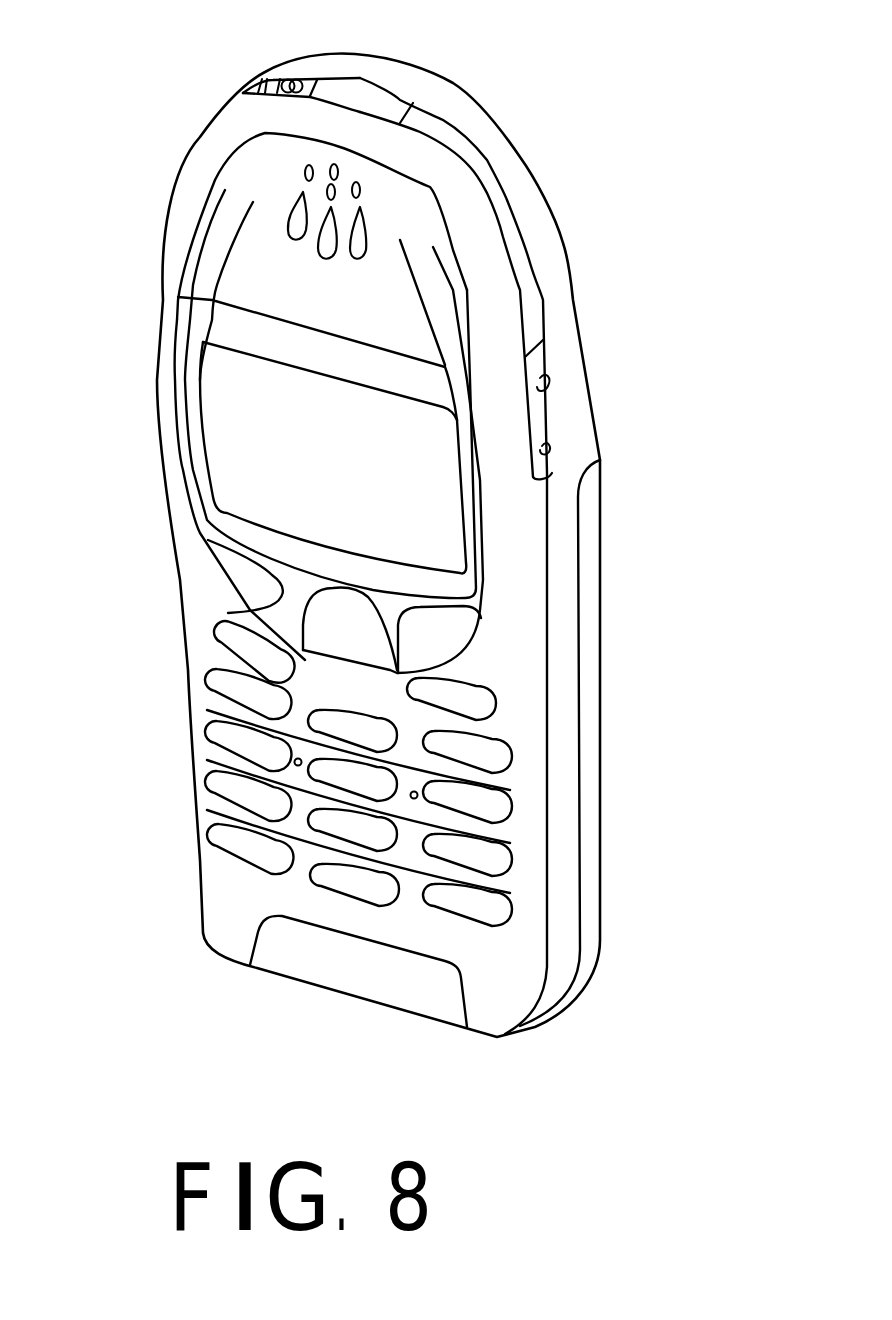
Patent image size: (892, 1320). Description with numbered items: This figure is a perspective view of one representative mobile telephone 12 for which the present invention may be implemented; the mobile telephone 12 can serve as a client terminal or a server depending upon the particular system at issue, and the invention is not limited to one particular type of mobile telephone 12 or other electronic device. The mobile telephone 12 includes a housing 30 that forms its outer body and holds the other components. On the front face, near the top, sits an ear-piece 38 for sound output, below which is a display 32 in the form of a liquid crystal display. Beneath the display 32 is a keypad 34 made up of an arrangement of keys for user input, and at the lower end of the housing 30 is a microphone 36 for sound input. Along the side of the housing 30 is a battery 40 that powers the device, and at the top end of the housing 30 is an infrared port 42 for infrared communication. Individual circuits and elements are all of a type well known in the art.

The mobile phone 12 is at (517, 67).
The housing 30 is at (557, 253).
The display 32 is at (433, 508).
The keypad 34 is at (463, 913).
The bottom panel 36 is at (283, 958).
The speaker openings 38 is at (318, 200).
The side panel 40 is at (593, 887).
The earpiece strip 42 is at (357, 93).